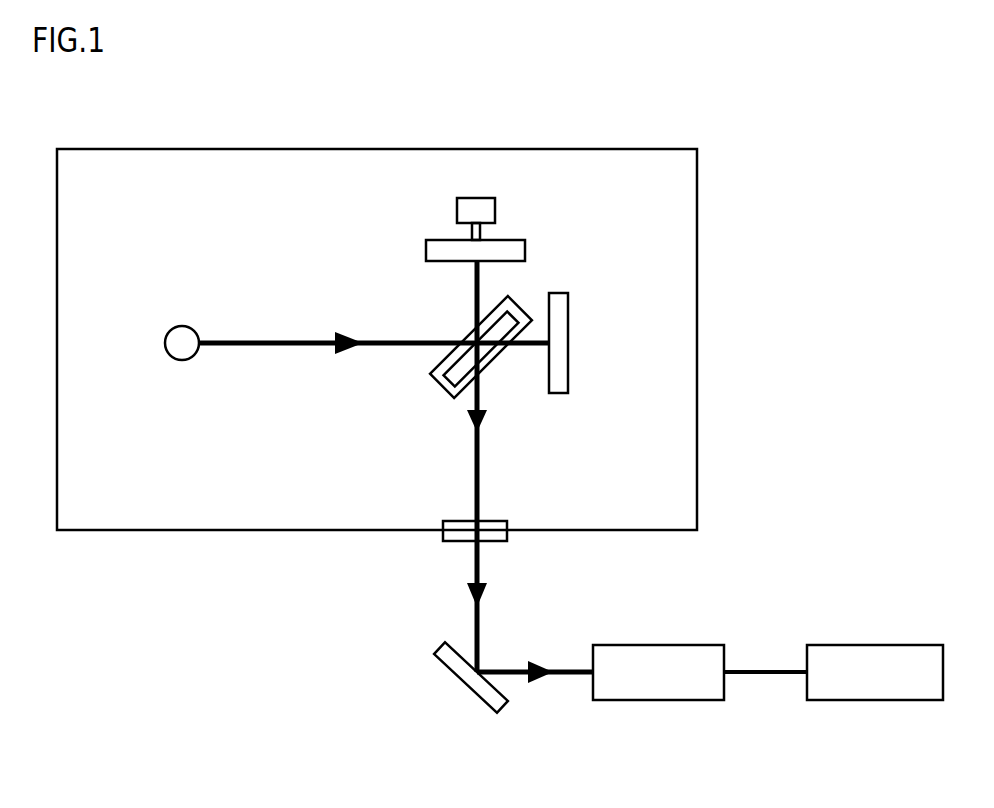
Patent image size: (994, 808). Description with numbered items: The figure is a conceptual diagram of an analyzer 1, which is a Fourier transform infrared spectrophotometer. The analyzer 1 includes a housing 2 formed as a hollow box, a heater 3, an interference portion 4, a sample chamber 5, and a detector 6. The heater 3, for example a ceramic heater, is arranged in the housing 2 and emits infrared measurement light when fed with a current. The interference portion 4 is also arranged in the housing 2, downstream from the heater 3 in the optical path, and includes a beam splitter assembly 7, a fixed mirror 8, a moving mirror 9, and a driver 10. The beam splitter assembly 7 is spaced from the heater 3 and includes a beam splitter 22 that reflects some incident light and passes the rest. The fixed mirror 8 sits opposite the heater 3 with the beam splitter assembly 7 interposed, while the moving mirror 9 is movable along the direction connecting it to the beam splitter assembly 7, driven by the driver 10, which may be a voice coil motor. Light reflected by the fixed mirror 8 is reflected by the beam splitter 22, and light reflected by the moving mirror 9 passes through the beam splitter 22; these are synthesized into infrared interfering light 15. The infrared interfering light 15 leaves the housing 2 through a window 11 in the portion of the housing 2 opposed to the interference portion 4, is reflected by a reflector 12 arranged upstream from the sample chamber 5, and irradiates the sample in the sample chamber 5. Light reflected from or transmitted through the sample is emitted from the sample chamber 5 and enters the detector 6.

The analyzer 1 is at (661, 106).
The housing 2 is at (698, 267).
The heater 3 is at (182, 326).
The interference portion 4 is at (548, 260).
The sample chamber 5 is at (649, 645).
The detector 6 is at (874, 645).
The beam splitter assembly 7 is at (419, 386).
The fixed mirror 8 is at (568, 322).
The moving mirror 9 is at (426, 251).
The driver 10 is at (497, 209).
The window 11 is at (459, 541).
The reflector 12 is at (448, 668).
The infrared interfering light 15 is at (480, 472).
The beam splitter 22 is at (446, 384).